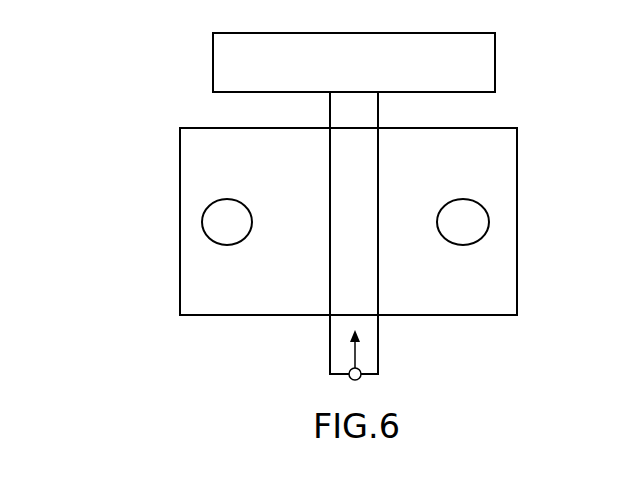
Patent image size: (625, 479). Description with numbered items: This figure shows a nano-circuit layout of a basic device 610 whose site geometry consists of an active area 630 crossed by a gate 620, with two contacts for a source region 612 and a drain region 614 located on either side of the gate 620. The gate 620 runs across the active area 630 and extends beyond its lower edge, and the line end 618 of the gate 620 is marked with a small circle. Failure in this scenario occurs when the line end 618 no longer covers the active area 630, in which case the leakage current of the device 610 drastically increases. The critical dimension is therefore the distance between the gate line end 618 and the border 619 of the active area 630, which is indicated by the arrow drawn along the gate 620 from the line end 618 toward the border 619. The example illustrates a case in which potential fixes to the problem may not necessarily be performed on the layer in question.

The basic device 610 is at (92, 116).
The active area 630 is at (545, 156).
The gate 620 is at (329, 322).
The source region 612 is at (208, 222).
The drain region 614 is at (478, 222).
The border 619 is at (467, 316).
The line end 618 is at (362, 378).